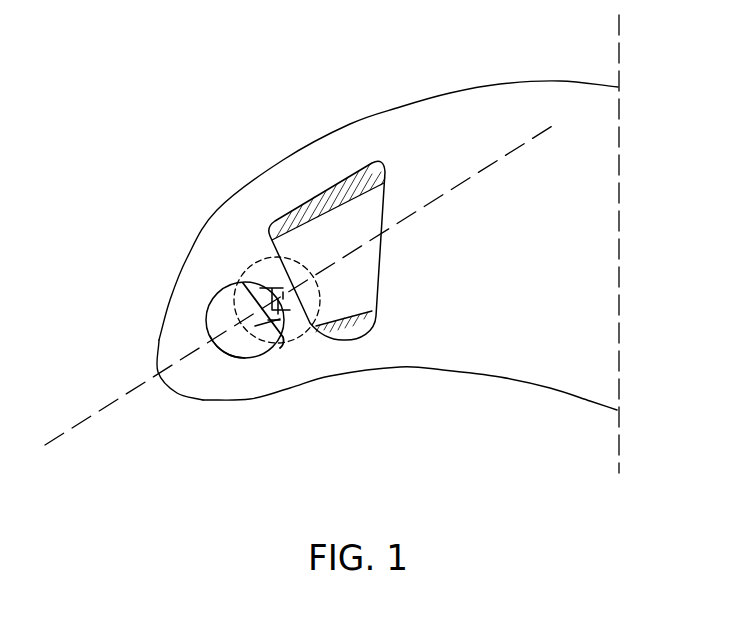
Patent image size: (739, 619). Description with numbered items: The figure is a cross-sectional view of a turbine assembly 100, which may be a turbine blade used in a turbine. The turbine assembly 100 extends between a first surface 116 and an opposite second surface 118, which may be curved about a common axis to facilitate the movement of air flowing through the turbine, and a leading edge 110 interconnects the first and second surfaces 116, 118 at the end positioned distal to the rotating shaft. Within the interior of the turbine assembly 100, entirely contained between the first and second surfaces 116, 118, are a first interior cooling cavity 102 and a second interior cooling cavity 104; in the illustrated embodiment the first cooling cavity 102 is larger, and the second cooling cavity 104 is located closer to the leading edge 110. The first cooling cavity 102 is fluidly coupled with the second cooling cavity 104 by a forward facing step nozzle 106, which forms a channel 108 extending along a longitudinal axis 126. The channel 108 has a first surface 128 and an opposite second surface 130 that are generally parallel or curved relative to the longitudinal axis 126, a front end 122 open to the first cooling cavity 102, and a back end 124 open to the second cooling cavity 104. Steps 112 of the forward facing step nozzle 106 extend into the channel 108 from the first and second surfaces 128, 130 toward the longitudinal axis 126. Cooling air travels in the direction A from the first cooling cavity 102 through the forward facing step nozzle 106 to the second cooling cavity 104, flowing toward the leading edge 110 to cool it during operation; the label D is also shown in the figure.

The turbine assembly 100 is at (383, 244).
The first interior cooling cavity 102 is at (327, 252).
The second interior cooling cavity 104 is at (230, 352).
The forward facing step nozzle 106 is at (232, 283).
The channel 108 is at (264, 256).
The leading edge 110 is at (173, 395).
The steps 112 is at (290, 355).
The first surface 116 is at (460, 88).
The second surface 118 is at (443, 370).
The front end 122 is at (276, 222).
The back end 124 is at (277, 362).
The longitudinal axis 126 is at (120, 400).
The first surface of the channel 128 is at (248, 258).
The second surface of the channel 130 is at (333, 330).
The direction A is at (318, 266).
The distance D is at (327, 294).